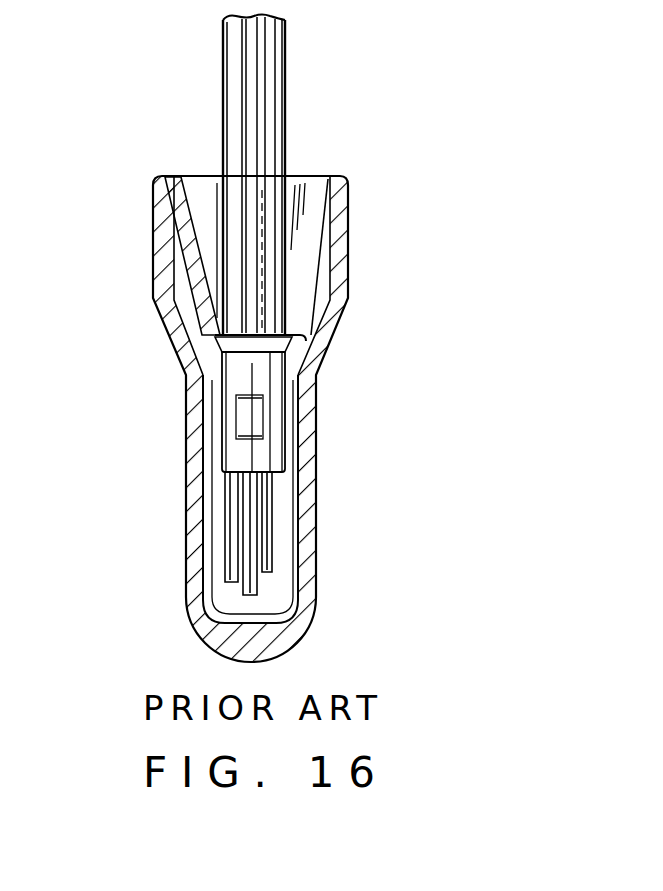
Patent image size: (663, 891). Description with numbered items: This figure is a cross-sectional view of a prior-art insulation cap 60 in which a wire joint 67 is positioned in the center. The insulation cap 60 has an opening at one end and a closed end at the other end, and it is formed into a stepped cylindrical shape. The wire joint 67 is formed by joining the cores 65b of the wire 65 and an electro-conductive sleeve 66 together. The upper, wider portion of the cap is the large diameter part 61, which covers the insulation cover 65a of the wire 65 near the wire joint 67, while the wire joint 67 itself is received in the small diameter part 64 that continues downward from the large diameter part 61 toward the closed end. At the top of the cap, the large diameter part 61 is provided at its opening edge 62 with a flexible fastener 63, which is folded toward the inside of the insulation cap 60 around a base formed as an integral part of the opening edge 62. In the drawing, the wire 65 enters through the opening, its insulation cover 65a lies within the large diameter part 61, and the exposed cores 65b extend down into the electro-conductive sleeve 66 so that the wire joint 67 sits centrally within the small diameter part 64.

The insulation cap 60 is at (330, 443).
The large diameter part 61 is at (345, 243).
The opening edge 62 is at (165, 178).
The flexible fastener 63 is at (177, 274).
The small diameter part 64 is at (307, 523).
The wire 65 is at (289, 81).
The insulation cover 65a is at (281, 225).
The cores 65b is at (265, 562).
The electro-conductive sleeve 66 is at (230, 424).
The wire joint 67 is at (221, 490).